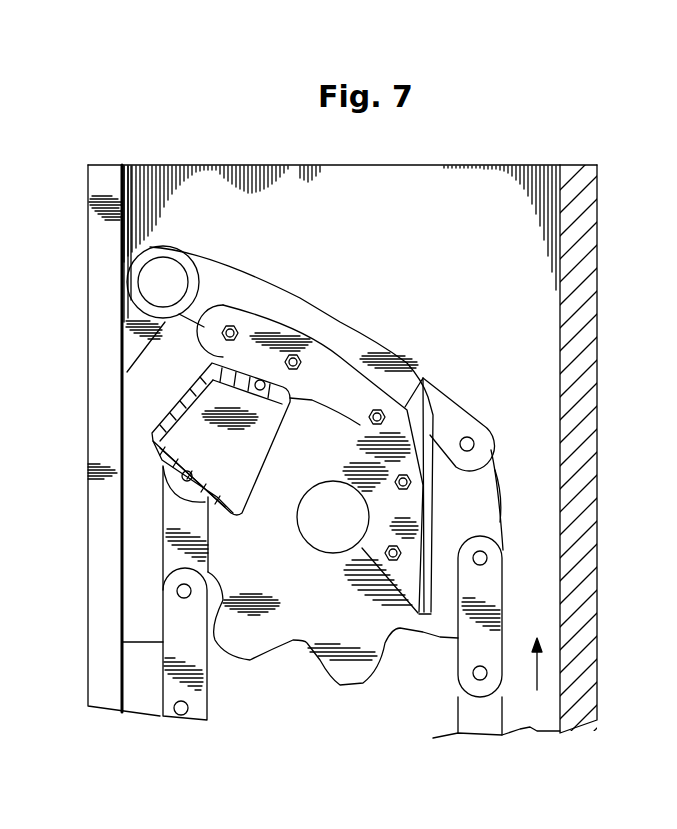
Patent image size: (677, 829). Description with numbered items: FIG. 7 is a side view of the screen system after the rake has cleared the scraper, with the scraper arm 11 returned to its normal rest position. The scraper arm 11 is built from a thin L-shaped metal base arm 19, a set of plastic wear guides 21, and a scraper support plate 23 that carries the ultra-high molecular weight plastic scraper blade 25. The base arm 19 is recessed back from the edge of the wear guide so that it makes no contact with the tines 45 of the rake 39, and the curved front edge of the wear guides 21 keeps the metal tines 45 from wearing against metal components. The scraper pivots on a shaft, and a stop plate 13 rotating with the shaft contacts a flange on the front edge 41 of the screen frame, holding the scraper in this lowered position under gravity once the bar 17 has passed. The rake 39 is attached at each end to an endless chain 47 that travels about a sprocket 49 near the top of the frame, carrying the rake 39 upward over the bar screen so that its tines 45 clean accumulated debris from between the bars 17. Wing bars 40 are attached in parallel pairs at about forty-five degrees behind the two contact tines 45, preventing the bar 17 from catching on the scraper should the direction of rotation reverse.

The scraper arm 11 is at (404, 257).
The stop plate 13 is at (127, 347).
The bar 17 is at (523, 610).
The base arm 19 is at (288, 297).
The wear guide 21 is at (348, 353).
The scraper support plate 23 is at (440, 393).
The scraper blade 25 is at (480, 507).
The rake 39 is at (207, 369).
The wing bar 40 is at (160, 420).
The front edge 41 is at (100, 233).
The tine 45 is at (158, 439).
The endless chain 47 is at (160, 643).
The sprocket 49 is at (248, 633).